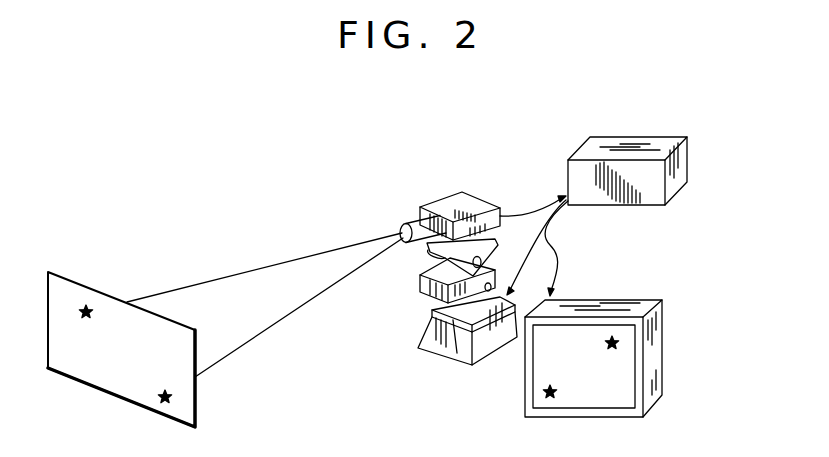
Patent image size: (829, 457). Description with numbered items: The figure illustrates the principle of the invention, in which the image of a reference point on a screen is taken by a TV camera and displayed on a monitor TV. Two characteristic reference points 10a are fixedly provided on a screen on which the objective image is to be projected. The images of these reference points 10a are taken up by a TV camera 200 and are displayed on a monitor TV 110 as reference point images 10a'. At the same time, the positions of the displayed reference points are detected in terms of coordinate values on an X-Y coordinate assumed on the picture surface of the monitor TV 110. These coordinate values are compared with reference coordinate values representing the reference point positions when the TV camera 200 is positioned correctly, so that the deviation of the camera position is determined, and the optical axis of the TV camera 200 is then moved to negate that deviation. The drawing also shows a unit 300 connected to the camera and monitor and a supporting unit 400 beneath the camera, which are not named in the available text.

The reference points 10a is at (130, 349).
The images of the reference points 10a' is at (588, 331).
The monitor TV 110 is at (663, 374).
The TV camera 200 is at (458, 192).
The control unit 300 is at (620, 138).
The camera positioning mechanism 400 is at (428, 287).